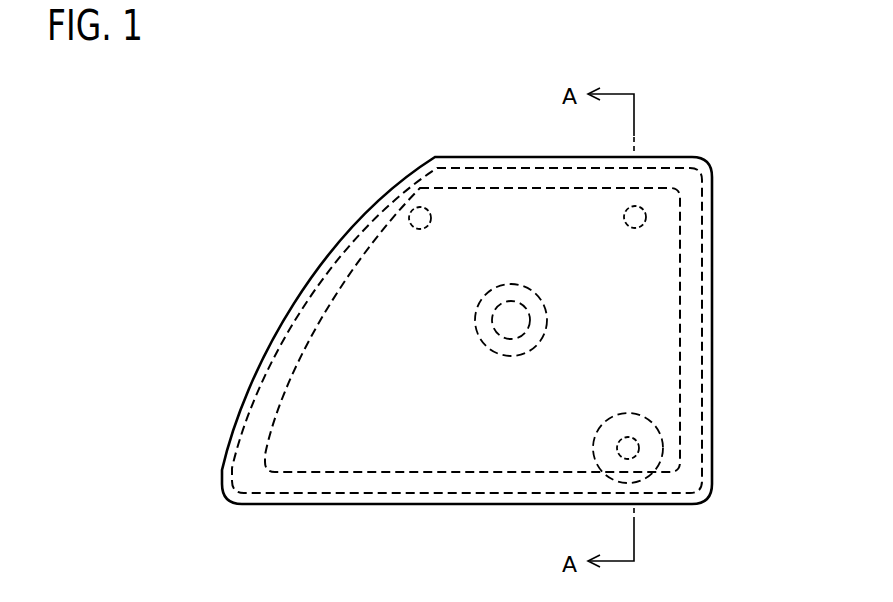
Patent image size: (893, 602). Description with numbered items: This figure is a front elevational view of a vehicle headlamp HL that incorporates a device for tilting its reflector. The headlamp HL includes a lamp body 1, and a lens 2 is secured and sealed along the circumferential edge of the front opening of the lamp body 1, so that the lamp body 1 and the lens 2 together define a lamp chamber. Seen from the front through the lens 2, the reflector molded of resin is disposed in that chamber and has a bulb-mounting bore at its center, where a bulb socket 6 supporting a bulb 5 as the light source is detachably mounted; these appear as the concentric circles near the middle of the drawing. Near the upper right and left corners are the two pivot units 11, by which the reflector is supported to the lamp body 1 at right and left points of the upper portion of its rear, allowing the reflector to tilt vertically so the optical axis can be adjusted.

The lamp body 1 is at (713, 338).
The lens 2 is at (382, 505).
The bulb 5 is at (505, 332).
The bulb socket 6 is at (546, 333).
The pivot unit 11 is at (420, 207).
The headlamp HL is at (722, 258).